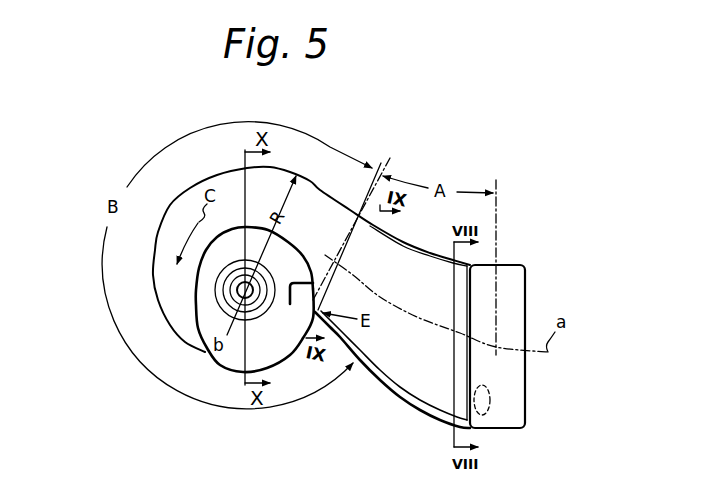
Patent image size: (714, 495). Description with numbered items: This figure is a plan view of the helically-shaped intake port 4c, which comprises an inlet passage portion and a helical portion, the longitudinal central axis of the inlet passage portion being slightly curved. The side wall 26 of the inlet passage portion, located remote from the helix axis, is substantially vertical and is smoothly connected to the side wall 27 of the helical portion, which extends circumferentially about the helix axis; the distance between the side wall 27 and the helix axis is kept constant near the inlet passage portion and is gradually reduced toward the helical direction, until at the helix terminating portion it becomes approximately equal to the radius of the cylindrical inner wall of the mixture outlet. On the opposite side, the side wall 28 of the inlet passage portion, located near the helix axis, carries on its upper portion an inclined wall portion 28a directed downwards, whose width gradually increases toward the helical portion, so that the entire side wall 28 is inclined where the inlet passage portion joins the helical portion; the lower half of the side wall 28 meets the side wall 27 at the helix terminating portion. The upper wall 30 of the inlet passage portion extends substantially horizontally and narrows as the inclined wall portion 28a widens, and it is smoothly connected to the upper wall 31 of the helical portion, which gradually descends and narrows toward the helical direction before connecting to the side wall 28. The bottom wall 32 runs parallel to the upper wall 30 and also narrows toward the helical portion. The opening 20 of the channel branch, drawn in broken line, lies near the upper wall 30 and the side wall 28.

The helically-shaped intake port 4c is at (524, 264).
The opening of the channel branch 20 is at (490, 418).
The side wall of the inlet passage portion 26 is at (428, 249).
The side wall of the helical portion 27 is at (172, 205).
The side wall of the inlet passage portion 28 is at (403, 399).
The inclined wall portion 28a is at (390, 378).
The upper wall of the inlet passage portion 30 is at (428, 385).
The upper wall of the helical portion 31 is at (189, 328).
The bottom wall of the inlet passage portion 32 is at (526, 386).